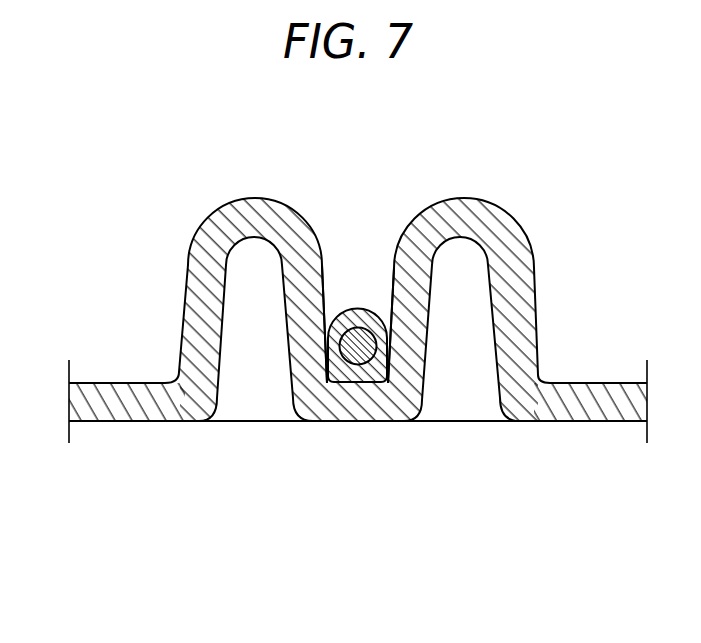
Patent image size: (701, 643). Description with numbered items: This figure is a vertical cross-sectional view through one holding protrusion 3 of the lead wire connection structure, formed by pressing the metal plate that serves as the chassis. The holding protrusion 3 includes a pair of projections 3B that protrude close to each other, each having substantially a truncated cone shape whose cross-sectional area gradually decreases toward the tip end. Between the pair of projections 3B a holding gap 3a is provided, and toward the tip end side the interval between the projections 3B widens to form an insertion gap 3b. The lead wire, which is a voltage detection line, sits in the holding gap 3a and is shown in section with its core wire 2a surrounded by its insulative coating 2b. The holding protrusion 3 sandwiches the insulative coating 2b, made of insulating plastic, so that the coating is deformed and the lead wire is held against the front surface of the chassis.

The holding protrusion 3 is at (334, 253).
The projection 3B is at (254, 222).
The holding gap 3a is at (326, 356).
The insertion gap 3b is at (387, 202).
The core wire 2a is at (355, 350).
The insulative coating 2b is at (373, 372).